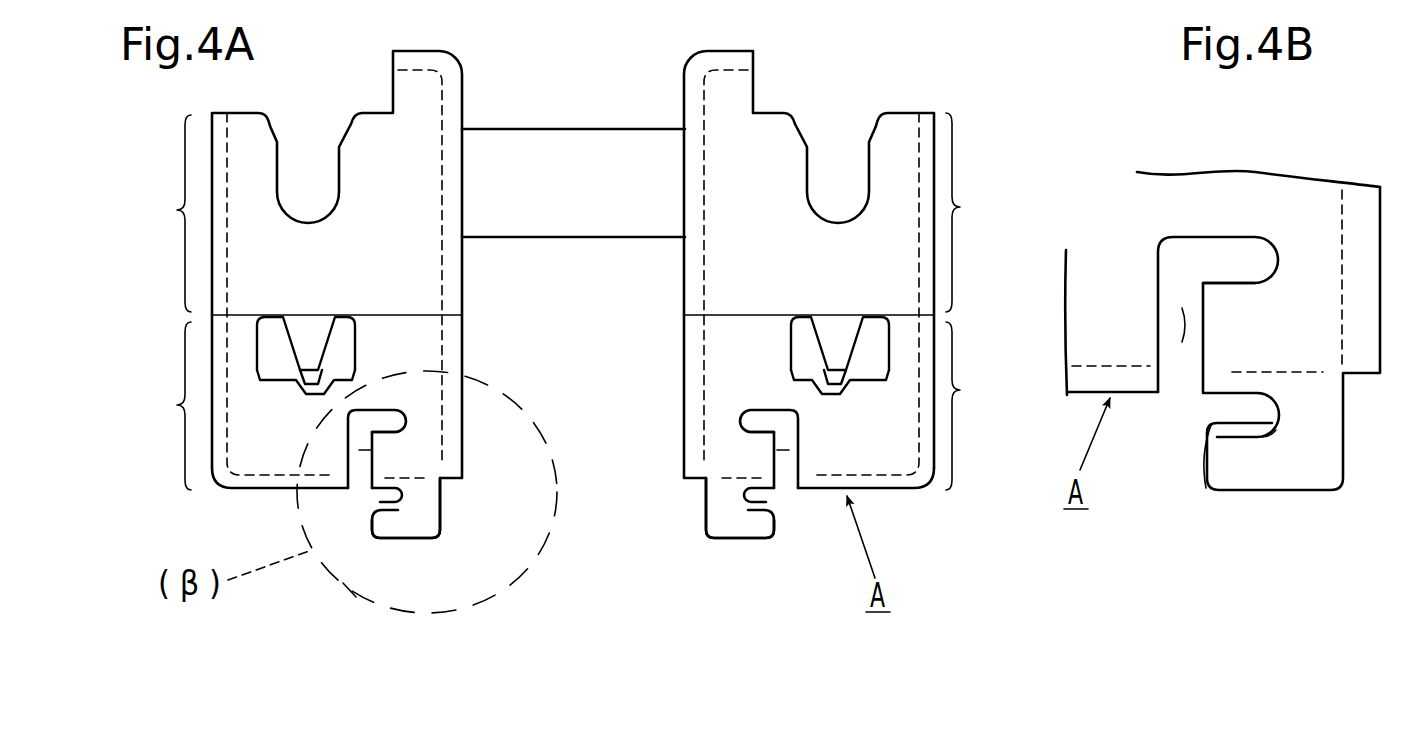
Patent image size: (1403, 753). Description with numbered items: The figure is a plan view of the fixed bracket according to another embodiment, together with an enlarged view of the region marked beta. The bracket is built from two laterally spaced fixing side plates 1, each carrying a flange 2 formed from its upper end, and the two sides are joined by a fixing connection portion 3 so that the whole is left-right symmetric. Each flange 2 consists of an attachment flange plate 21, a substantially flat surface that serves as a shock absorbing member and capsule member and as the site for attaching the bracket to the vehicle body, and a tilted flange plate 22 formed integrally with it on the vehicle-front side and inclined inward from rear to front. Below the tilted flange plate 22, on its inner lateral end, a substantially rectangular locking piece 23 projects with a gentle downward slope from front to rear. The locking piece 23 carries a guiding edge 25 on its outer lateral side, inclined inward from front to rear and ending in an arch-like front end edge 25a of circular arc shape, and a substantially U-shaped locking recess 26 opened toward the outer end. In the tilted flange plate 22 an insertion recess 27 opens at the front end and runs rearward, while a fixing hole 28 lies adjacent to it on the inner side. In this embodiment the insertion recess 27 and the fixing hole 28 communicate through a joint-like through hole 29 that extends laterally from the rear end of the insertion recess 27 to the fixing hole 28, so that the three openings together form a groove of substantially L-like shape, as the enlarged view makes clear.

In FIG. 4A, the fixing side plate 1 is at (457, 378).
In FIG. 4A, the flange 2 is at (230, 492).
In FIG. 4A, the fixing connection portion 3 is at (498, 240).
In FIG. 4A, the attachment flange plate 21 is at (570, 212).
In FIG. 4A, the tilted flange plate 22 is at (570, 403).
In FIG. 4A, the locking piece 23 is at (440, 537).
In FIG. 4A, the guiding edge 25 is at (374, 540).
In FIG. 4B, the guiding edge 25 is at (1199, 422).
In FIG. 4B, the arch-like front end edge 25a is at (1207, 487).
In FIG. 4A, the locking recess 26 is at (402, 497).
In FIG. 4B, the locking recess 26 is at (1237, 395).
In FIG. 4A, the insertion recess 27 is at (365, 452).
In FIG. 4B, the insertion recess 27 is at (1182, 327).
In FIG. 4A, the fixing hole 28 is at (402, 420).
In FIG. 4B, the fixing hole 28 is at (1260, 252).
In FIG. 4A, the joint-like through hole 29 is at (388, 418).
In FIG. 4B, the joint-like through hole 29 is at (1225, 252).